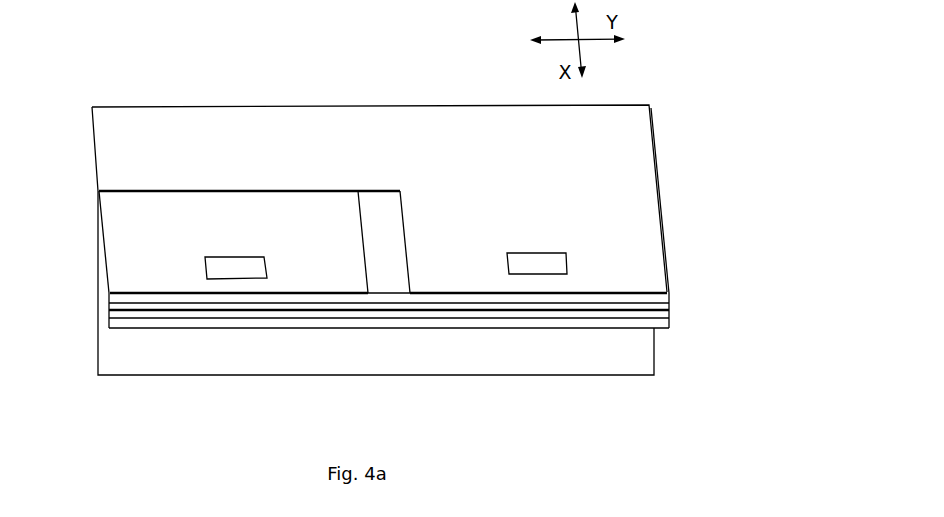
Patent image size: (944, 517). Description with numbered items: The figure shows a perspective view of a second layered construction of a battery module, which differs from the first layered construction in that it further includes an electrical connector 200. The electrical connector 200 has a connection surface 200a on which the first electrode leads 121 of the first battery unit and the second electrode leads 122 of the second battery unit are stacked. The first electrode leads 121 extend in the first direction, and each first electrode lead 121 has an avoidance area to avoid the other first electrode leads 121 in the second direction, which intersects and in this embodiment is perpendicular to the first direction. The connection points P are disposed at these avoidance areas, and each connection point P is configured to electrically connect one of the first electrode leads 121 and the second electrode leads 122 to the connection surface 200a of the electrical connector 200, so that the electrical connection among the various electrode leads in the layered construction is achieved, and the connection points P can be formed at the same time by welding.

The electrical connector 200 is at (340, 362).
The connection surface 200a is at (383, 209).
The first electrode lead 121 is at (122, 158).
The second electrode lead 122 is at (118, 305).
The connection point P is at (240, 268).